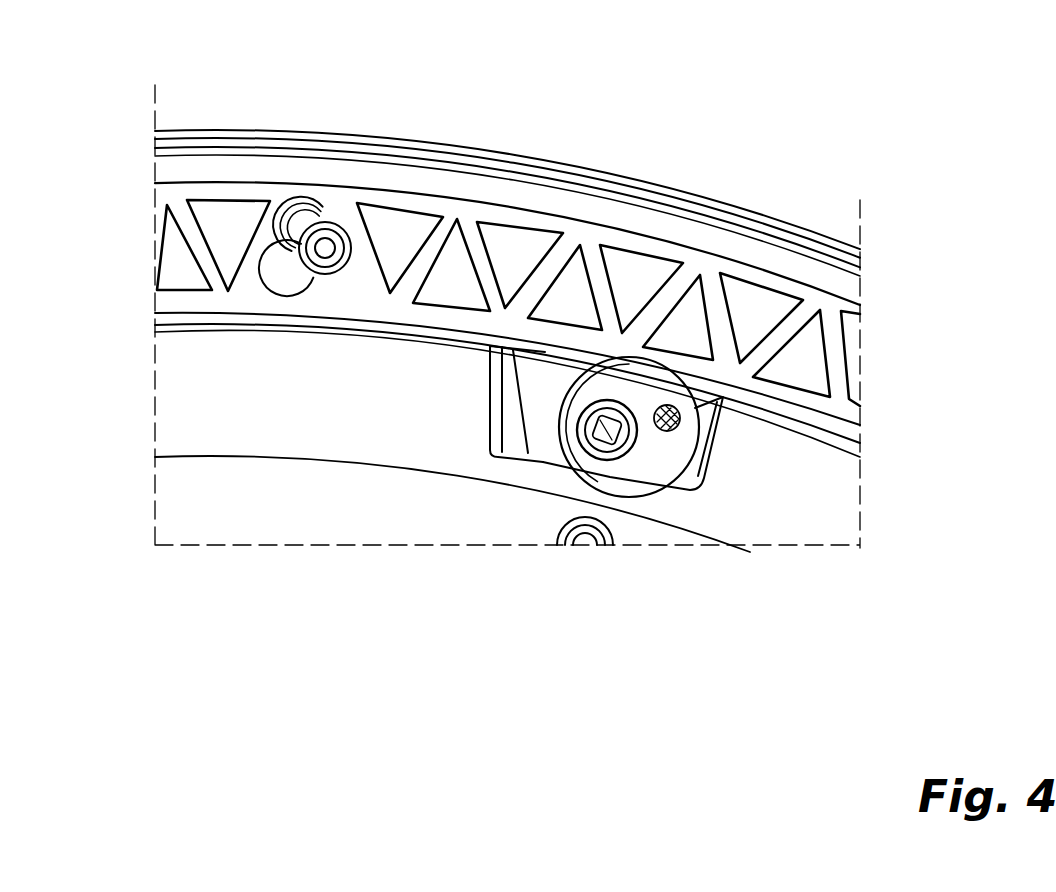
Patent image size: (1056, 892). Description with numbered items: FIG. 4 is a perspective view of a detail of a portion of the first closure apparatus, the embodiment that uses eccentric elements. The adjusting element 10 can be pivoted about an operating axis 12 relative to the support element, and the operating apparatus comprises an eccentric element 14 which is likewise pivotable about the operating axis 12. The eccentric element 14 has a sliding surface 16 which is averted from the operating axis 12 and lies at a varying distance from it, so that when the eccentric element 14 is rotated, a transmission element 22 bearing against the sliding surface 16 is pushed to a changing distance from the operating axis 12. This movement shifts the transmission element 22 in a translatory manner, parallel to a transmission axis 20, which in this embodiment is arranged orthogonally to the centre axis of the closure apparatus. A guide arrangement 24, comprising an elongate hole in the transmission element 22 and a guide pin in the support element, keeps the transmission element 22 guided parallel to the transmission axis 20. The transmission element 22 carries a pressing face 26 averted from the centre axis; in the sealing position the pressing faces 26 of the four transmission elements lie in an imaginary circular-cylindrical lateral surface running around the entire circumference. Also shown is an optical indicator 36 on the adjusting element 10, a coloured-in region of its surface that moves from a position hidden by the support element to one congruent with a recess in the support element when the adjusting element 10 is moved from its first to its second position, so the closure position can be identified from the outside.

The adjusting element 10 is at (605, 465).
The operating axis 12 is at (717, 540).
The eccentric element 14 is at (665, 448).
The sliding surface 16 is at (550, 405).
The transmission axis 20 is at (435, 60).
The transmission element 22 is at (262, 305).
The guide arrangement 24 is at (284, 207).
The pressing face 26 is at (807, 280).
The optical indicator 36 is at (860, 427).